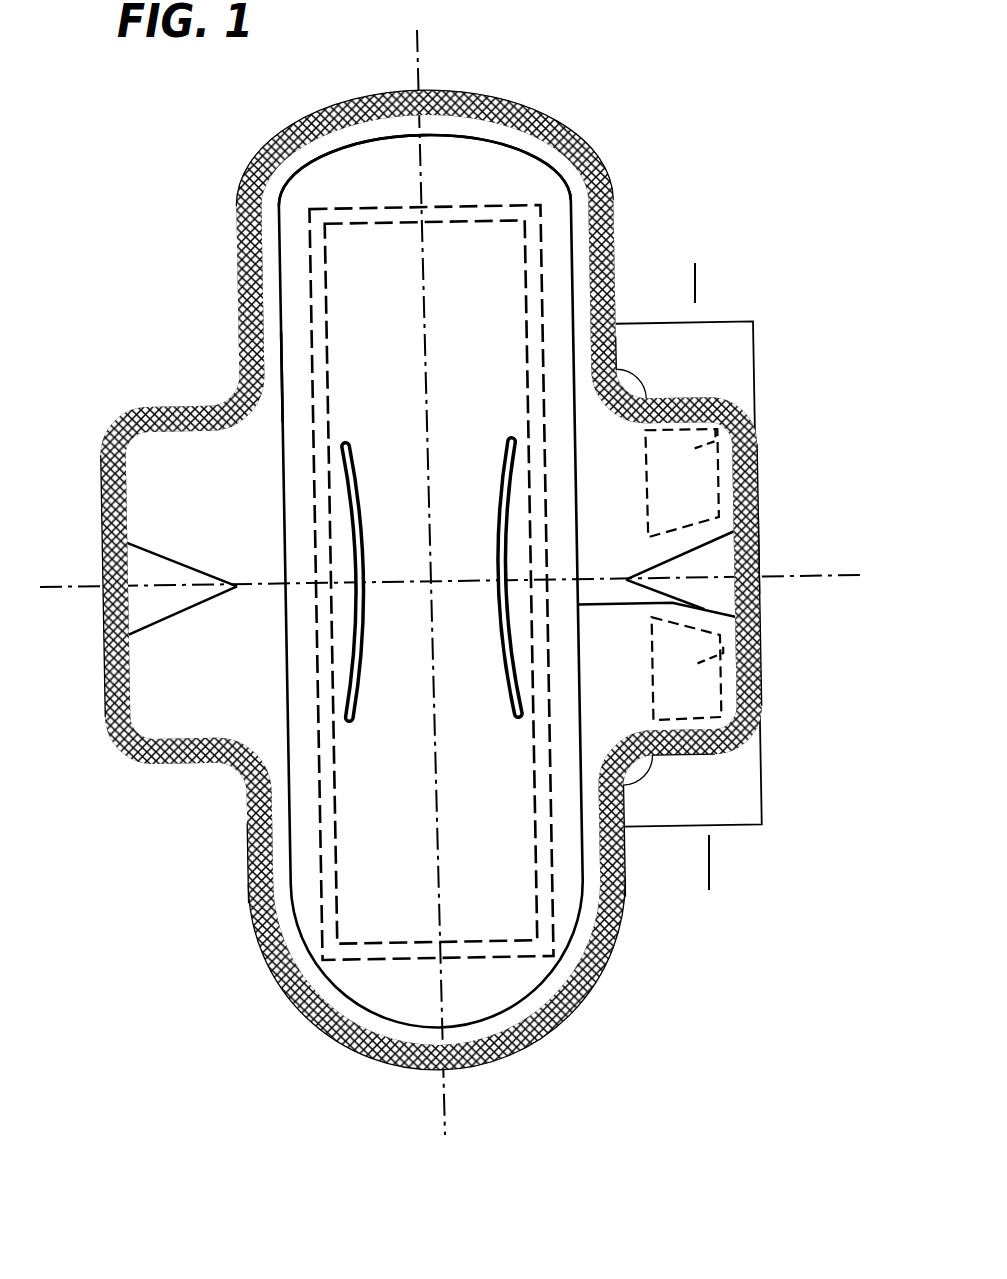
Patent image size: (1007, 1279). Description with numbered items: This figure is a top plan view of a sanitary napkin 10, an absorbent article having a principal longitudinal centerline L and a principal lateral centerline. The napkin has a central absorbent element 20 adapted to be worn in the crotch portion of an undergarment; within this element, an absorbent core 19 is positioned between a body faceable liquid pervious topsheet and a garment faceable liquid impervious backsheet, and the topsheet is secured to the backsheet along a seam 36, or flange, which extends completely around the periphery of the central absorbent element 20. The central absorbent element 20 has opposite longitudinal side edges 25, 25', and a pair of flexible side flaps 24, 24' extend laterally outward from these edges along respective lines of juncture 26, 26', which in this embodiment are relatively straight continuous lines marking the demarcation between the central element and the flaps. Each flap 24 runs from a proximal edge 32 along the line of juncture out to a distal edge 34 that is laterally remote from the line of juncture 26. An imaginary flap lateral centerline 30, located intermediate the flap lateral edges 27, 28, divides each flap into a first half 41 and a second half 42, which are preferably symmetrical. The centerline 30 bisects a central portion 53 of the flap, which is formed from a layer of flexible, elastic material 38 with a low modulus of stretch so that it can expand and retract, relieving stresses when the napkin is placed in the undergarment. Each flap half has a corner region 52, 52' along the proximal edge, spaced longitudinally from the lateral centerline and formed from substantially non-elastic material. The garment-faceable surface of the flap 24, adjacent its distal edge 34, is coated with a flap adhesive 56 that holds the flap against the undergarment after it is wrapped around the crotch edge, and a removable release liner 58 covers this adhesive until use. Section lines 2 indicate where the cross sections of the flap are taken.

The sanitary napkin 10 is at (603, 115).
The absorbent core 19 is at (455, 163).
The central absorbent element 20 is at (575, 237).
The side flap 24 is at (808, 563).
The side flap 24' is at (88, 538).
The longitudinal side edge 25 is at (655, 892).
The longitudinal side edge 25' is at (219, 880).
The line of juncture 26 is at (479, 581).
The line of juncture 26' is at (222, 362).
The flap lateral edge 27 is at (687, 398).
The flap lateral edge 28 is at (702, 755).
The flap lateral centerline 30 is at (58, 586).
The proximal edge 32 is at (758, 608).
The distal edge 34 is at (758, 689).
The seam 36 is at (576, 1017).
The flexible elastic material 38 is at (733, 590).
The first half 41 is at (758, 494).
The second half 42 is at (745, 667).
The corner region 52 is at (763, 386).
The corner region 52' is at (786, 697).
The central portion 53 is at (733, 557).
The flap adhesive 56 is at (757, 418).
The release liner 58 is at (495, 243).
The section line 2- 2 is at (684, 270).
The longitudinal axis L is at (415, 46).